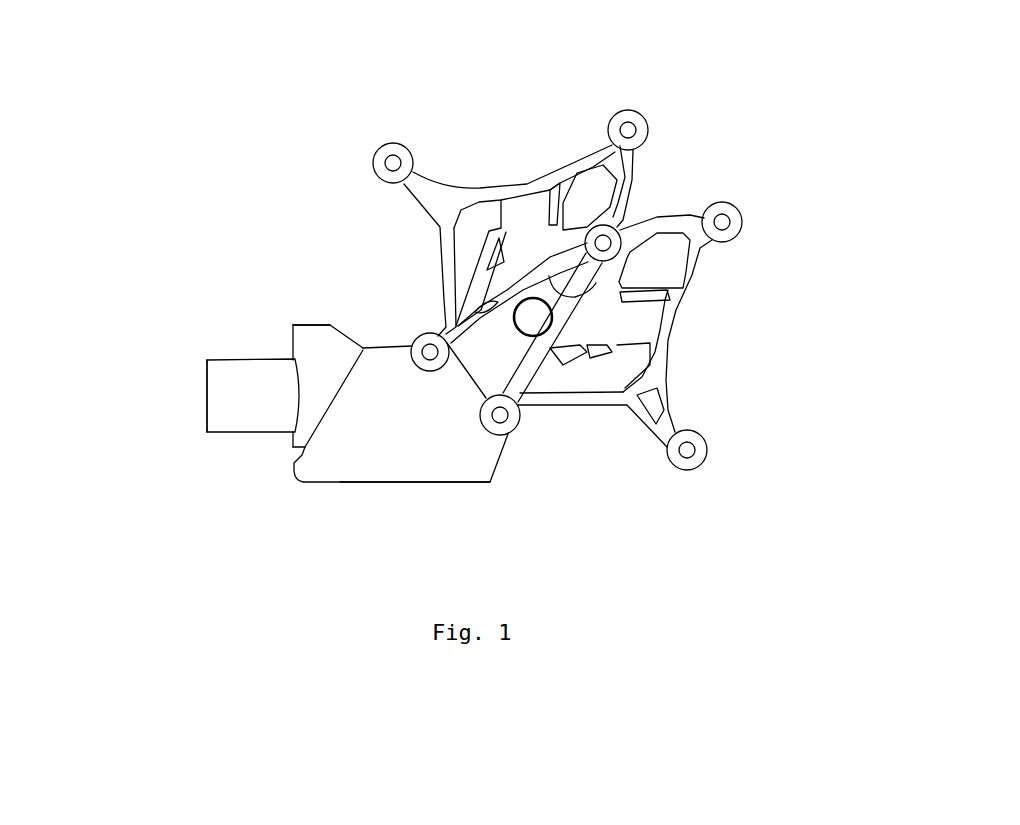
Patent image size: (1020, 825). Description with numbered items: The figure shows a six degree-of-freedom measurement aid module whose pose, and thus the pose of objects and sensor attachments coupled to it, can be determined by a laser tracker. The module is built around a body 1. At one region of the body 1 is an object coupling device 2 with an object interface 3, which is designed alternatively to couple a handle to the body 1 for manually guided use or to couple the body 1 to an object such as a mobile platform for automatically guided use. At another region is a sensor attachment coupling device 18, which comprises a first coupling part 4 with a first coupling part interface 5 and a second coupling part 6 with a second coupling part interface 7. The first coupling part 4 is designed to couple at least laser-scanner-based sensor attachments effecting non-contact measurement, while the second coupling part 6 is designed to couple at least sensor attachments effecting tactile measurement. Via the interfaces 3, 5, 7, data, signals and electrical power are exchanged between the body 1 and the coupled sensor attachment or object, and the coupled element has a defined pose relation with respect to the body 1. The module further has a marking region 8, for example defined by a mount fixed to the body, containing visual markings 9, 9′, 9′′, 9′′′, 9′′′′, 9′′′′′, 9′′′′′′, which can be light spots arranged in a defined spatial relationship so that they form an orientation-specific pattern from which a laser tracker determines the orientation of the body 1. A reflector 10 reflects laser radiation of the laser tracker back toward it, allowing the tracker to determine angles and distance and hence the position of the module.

The body 1 is at (420, 444).
The object coupling device 2 is at (420, 482).
The object interface 3 is at (370, 483).
The first coupling part 4 is at (330, 374).
The first coupling part interface 5 is at (293, 337).
The second coupling part 6 is at (257, 404).
The second coupling part interface 7 is at (207, 378).
The marking region 8 is at (725, 348).
The visual marking 9 is at (500, 415).
The visual marking 9′ is at (430, 350).
The visual marking 9′′ is at (603, 243).
The visual marking 9′′′ is at (687, 450).
The visual marking 9′′′′ is at (722, 222).
The visual marking 9′′′′′ is at (628, 130).
The visual marking 9′′′′′′ is at (393, 163).
The reflector 10 is at (532, 297).
The sensor attachment coupling device 18 is at (192, 253).